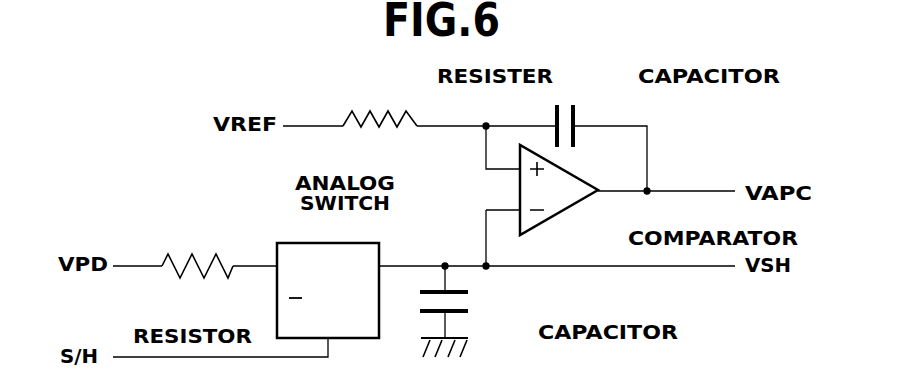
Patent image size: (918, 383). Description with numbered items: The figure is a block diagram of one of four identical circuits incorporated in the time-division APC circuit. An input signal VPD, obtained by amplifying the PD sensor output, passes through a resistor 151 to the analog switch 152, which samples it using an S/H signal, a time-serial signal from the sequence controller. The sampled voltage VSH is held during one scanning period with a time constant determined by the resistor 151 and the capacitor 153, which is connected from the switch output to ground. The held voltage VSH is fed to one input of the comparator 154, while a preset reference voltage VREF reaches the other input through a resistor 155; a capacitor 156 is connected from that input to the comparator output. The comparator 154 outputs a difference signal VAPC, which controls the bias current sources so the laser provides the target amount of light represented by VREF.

The resistor 151 is at (180, 278).
The analog switch 152 is at (288, 243).
The capacitor 153 is at (462, 312).
The comparator 154 is at (553, 218).
The resistor 155 is at (381, 118).
The capacitor 156 is at (577, 116).